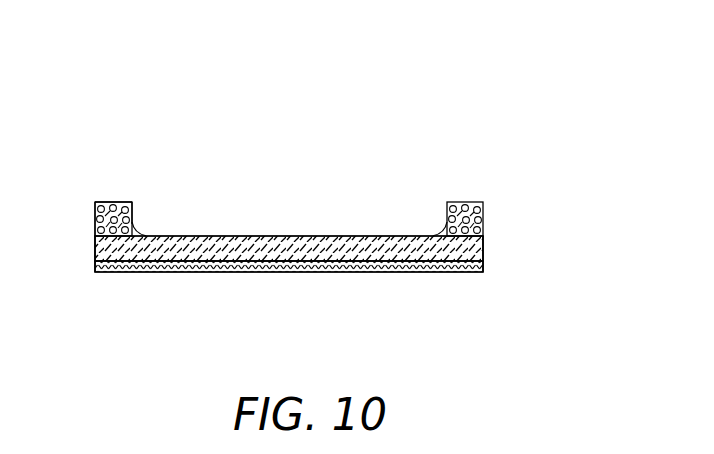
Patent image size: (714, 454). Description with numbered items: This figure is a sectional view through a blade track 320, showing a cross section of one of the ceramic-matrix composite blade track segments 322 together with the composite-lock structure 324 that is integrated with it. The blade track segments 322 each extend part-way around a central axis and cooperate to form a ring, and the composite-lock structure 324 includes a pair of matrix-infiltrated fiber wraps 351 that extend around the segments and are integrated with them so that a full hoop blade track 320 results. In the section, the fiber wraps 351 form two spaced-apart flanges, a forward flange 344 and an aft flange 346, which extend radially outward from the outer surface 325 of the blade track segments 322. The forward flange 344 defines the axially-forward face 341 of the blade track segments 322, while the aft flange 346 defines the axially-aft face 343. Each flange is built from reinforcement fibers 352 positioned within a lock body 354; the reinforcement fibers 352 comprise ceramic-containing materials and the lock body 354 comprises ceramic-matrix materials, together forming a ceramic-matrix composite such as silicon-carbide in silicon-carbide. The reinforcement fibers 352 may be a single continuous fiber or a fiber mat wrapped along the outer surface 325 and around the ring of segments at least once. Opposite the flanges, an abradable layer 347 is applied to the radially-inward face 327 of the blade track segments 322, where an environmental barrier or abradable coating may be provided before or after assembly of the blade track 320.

The blade track 320 is at (436, 78).
The blade track segments 322 is at (505, 236).
The composite-lock structure 324 is at (422, 210).
The outer surface 325 is at (386, 238).
The radially-inward face 327 is at (468, 266).
The axially-forward face 341 is at (96, 237).
The axially-aft face 343 is at (484, 240).
The forward flange 344 is at (120, 192).
The aft flange 346 is at (456, 192).
The abradable layer 347 is at (314, 264).
The matrix-infiltrated fiber wraps 351 is at (85, 218).
The reinforcement fibers 352 is at (129, 193).
The lock body 354 is at (143, 222).